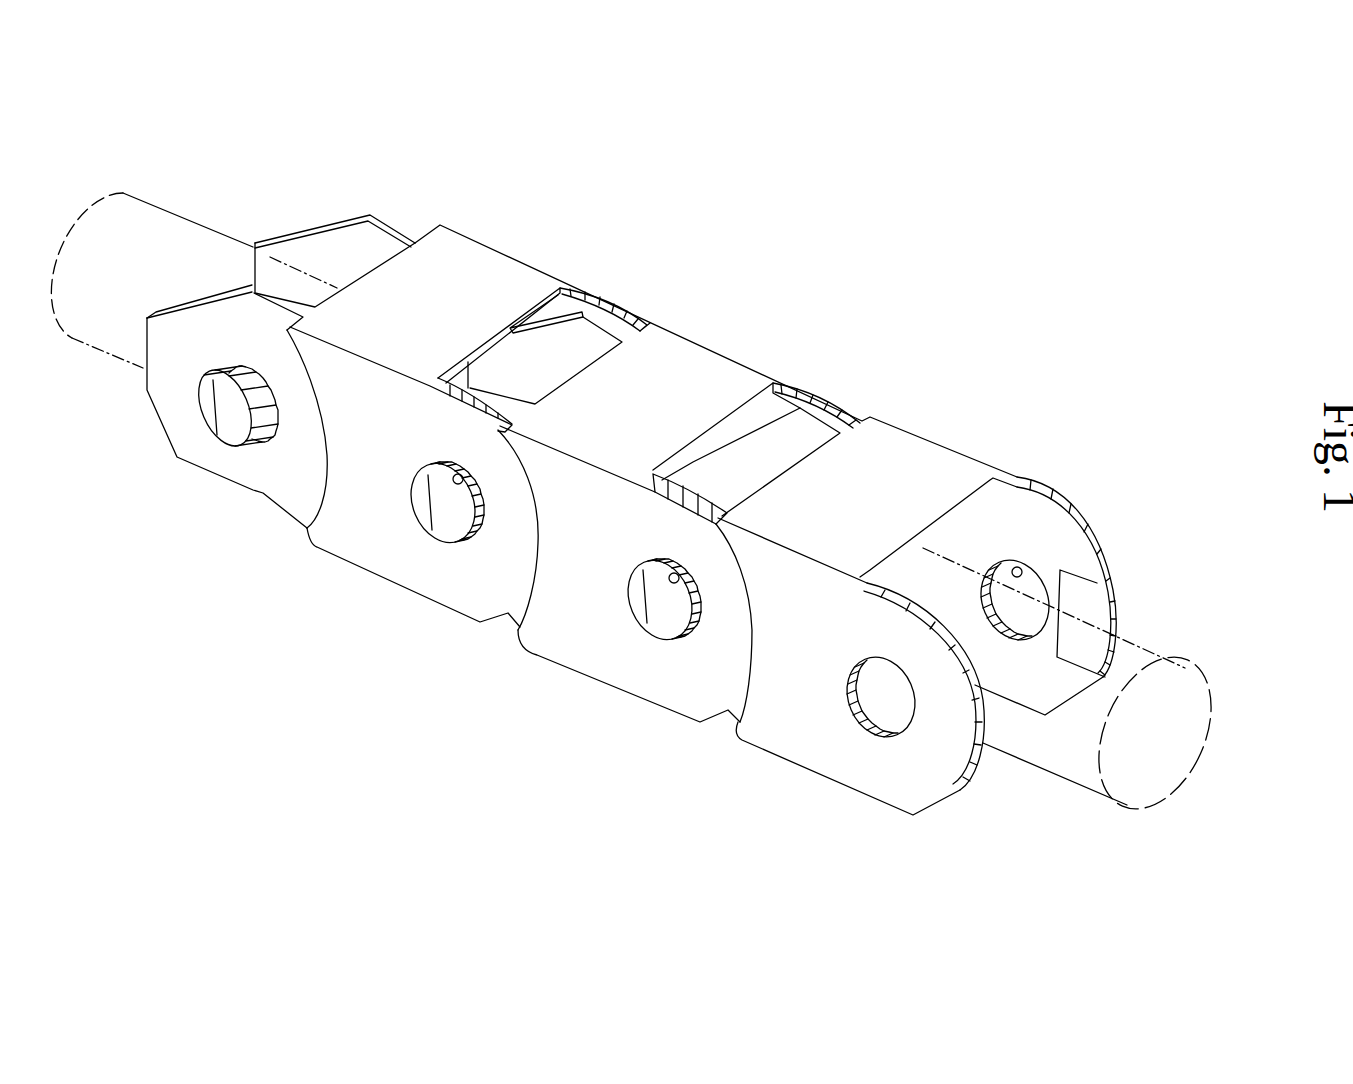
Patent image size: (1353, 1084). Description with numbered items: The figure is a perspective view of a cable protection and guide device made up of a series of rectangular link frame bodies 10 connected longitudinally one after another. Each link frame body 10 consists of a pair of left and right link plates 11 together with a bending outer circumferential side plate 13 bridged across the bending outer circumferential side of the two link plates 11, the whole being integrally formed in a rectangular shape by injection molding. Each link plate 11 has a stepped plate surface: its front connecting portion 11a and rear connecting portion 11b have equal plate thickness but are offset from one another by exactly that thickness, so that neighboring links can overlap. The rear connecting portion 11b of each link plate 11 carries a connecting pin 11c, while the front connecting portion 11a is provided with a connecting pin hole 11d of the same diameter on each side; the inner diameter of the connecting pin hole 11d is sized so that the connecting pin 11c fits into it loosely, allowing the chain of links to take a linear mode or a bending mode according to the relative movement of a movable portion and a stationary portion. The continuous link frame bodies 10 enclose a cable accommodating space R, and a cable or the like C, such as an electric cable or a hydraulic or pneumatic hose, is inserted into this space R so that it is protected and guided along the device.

The link frame body 10 is at (414, 208).
The link plate 11 is at (185, 563).
The front connecting portion 11a is at (610, 293).
The rear connecting portion 11b is at (330, 240).
The connecting pin 11c is at (203, 405).
The connecting pin hole 11d is at (456, 480).
The bending outer circumferential side plate 13 is at (473, 252).
The cable accommodating space R is at (993, 760).
The cable or the like C is at (1080, 793).